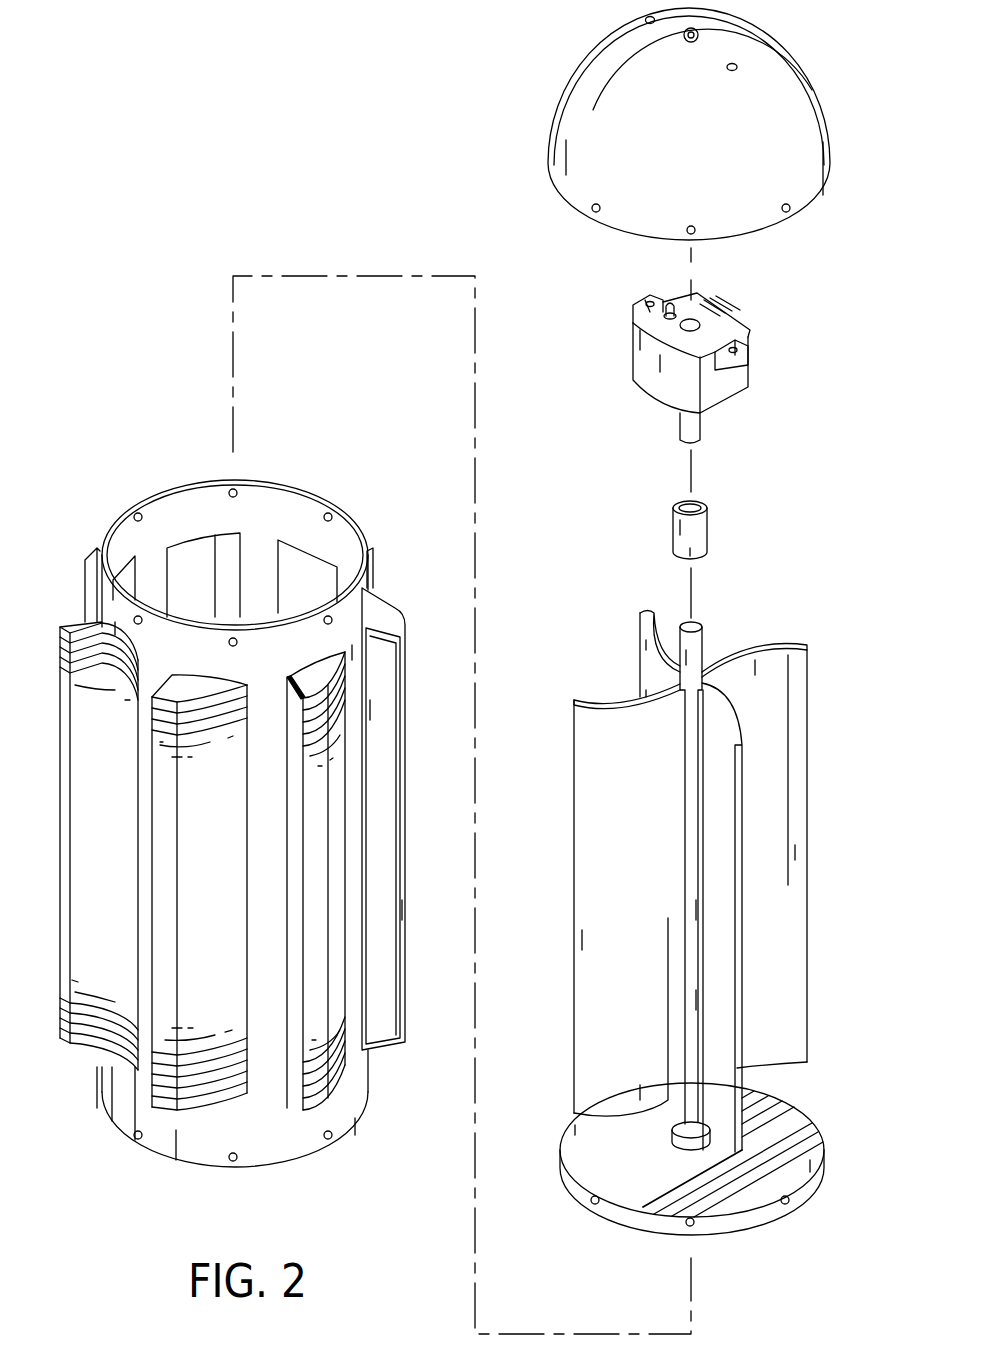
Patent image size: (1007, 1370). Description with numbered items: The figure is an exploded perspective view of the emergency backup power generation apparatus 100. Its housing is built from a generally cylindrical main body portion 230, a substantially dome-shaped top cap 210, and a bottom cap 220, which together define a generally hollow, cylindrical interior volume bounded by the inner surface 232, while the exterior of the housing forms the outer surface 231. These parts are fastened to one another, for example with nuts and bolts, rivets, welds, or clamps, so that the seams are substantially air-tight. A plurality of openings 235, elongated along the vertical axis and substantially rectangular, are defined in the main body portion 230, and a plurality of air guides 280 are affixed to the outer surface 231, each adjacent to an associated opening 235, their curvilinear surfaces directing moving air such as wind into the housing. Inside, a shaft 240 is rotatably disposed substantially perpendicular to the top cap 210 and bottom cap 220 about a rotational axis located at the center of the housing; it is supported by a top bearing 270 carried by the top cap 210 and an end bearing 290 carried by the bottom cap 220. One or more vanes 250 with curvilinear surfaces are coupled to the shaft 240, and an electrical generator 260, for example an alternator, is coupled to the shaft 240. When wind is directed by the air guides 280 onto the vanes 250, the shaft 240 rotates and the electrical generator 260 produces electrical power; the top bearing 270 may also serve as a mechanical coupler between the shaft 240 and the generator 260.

The emergency backup power generation apparatus 100 is at (293, 153).
The top cap 210 is at (583, 118).
The bottom cap 220 is at (730, 1183).
The main body portion 230 is at (251, 817).
The outer surface 231 is at (213, 1137).
The inner surface 232 is at (131, 540).
The openings 235 is at (302, 545).
The shaft 240 is at (703, 642).
The vanes 250 is at (808, 670).
The electrical generator 260 is at (633, 347).
The top bearing 270 is at (673, 528).
The air guides 280 is at (383, 1045).
The end bearing 290 is at (677, 1147).